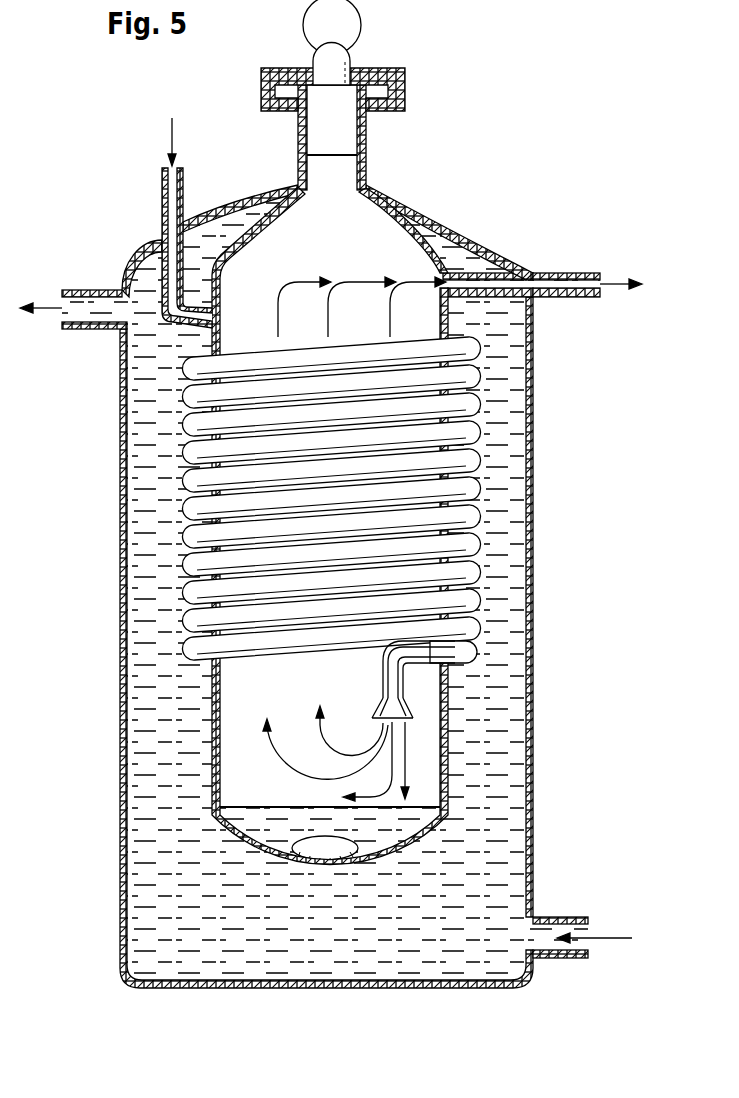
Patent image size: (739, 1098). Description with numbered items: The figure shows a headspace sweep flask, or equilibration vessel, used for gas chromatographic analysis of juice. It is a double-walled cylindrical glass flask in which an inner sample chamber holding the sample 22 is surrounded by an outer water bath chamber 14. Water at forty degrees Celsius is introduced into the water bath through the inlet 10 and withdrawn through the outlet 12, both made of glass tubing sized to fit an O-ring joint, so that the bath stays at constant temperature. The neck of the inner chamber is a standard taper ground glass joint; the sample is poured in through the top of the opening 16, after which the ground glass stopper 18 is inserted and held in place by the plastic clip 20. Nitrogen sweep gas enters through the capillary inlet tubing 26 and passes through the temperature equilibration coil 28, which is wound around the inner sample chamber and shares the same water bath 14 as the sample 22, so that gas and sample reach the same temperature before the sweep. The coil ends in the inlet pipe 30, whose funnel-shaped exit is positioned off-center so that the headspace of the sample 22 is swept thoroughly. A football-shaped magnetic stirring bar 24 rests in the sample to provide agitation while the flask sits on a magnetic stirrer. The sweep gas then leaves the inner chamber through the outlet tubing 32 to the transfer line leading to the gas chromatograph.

The inlet 10 is at (590, 932).
The outlet 12 is at (62, 300).
The outer water bath chamber 14 is at (192, 867).
The opening 16 is at (333, 162).
The ground glass stopper 18 is at (347, 25).
The plastic clip 20 is at (397, 85).
The sample 22 is at (270, 822).
The magnetic stirring bar 24 is at (362, 866).
The inlet tubing 26 is at (176, 165).
The temperature equilibration coil 28 is at (475, 390).
The inlet pipe 30 is at (437, 653).
The outlet tubing 32 is at (600, 283).